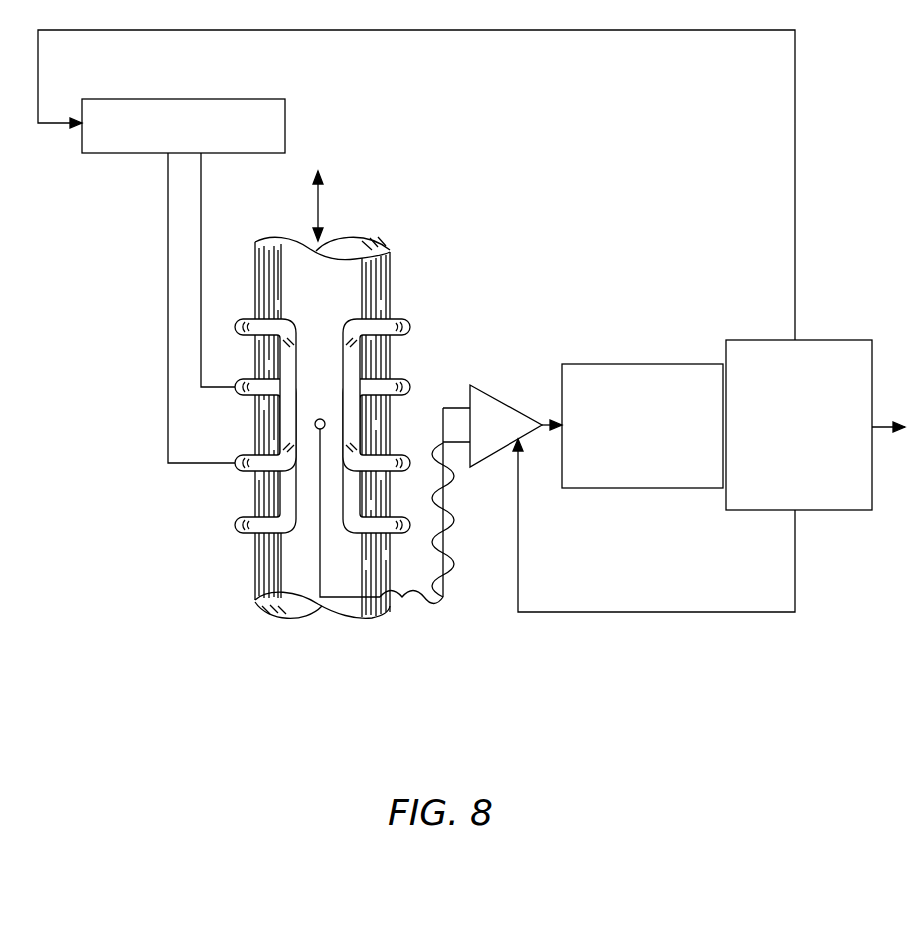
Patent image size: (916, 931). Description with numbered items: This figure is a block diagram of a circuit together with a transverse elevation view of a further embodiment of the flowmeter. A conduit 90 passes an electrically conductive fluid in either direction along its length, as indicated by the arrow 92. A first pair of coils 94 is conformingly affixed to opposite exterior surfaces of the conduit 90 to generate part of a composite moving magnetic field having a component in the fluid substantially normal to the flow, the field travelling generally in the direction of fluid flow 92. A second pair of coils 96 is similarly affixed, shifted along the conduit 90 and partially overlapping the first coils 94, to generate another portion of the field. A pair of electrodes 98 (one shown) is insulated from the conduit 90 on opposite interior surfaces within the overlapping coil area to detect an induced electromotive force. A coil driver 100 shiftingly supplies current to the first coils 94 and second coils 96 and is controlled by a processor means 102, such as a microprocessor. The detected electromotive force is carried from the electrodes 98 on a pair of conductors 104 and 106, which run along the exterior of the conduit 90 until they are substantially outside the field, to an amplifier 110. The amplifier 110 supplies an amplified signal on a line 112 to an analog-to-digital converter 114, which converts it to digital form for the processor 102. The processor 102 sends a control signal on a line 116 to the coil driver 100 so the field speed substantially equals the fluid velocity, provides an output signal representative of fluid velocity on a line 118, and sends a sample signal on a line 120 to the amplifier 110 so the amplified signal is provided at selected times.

The conduit 90 is at (392, 258).
The arrow 92 is at (323, 211).
The first pair of coils 94 is at (248, 317).
The second pair of coils 96 is at (235, 530).
The electrodes 98 is at (315, 424).
The coil driver 100 is at (197, 98).
The processor means 102 is at (766, 338).
The conductor 104 is at (438, 605).
The conductor 106 is at (451, 562).
The amplifier 110 is at (491, 452).
The line 112 is at (541, 420).
The analog-to-digital converter 114 is at (664, 362).
The line 116 is at (605, 30).
The line 118 is at (880, 430).
The line 120 is at (710, 613).